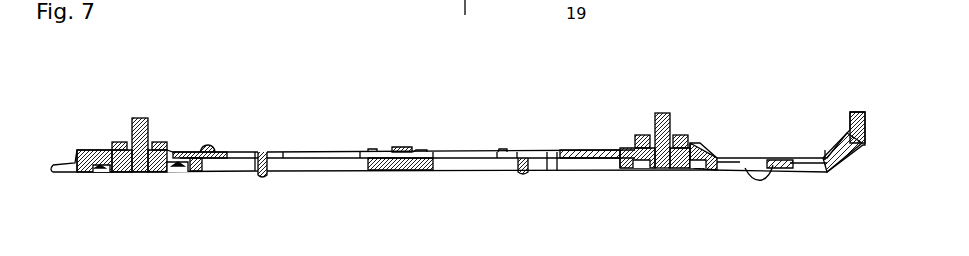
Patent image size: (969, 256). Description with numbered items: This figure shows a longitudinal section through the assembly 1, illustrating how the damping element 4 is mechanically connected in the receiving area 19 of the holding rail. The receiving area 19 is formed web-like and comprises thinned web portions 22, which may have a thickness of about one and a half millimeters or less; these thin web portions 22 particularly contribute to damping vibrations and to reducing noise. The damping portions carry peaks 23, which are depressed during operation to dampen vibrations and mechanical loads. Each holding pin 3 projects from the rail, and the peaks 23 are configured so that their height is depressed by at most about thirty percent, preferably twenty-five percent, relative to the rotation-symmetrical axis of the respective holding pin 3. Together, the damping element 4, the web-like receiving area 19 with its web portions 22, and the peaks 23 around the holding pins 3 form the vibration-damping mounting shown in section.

The guide rail assembly 1 is at (823, 49).
The holding pin 3 is at (148, 121).
The damping element 4 is at (155, 172).
The receiving area 19 is at (119, 182).
The web portions 22 is at (103, 172).
The peaks 23 is at (119, 137).